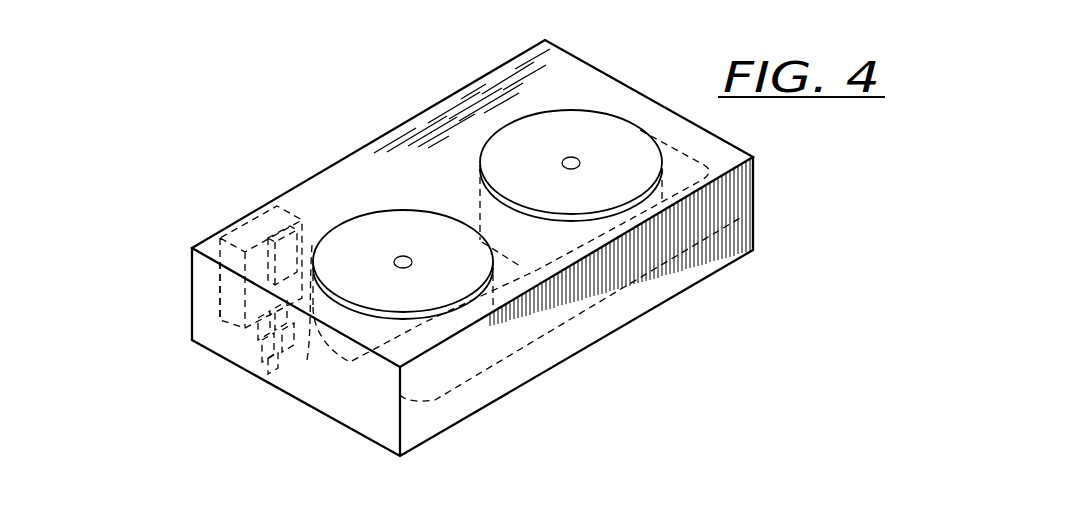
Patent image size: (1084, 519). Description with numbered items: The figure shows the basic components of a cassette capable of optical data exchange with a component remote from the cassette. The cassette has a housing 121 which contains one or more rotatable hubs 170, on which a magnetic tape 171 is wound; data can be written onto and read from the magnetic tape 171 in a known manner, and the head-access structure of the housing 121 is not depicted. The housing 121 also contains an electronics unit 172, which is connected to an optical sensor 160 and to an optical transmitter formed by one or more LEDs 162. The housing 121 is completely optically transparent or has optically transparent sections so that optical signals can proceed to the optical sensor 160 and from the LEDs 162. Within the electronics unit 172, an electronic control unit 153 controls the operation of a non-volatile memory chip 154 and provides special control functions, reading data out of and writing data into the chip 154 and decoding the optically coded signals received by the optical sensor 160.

The housing 121 is at (413, 118).
The electronic control unit 153 is at (257, 213).
The non-volatile memory chip 154 is at (312, 245).
The optical sensor 160 is at (262, 378).
The LED 162 is at (307, 360).
The rotatable hub 170 is at (592, 138).
The magnetic tape 171 is at (443, 367).
The electronics unit 172 is at (220, 257).